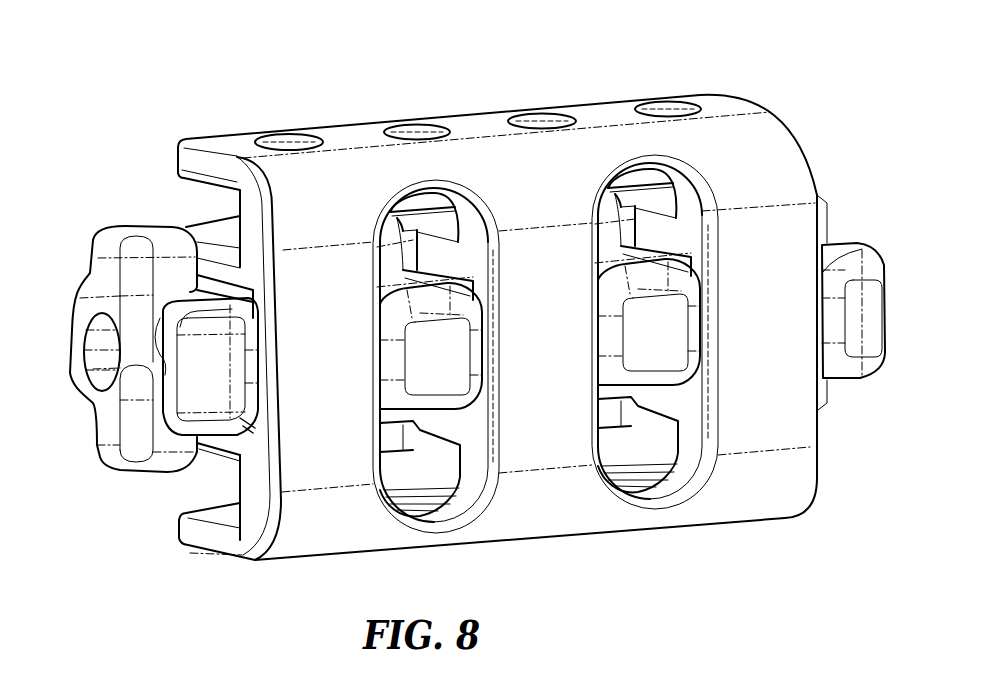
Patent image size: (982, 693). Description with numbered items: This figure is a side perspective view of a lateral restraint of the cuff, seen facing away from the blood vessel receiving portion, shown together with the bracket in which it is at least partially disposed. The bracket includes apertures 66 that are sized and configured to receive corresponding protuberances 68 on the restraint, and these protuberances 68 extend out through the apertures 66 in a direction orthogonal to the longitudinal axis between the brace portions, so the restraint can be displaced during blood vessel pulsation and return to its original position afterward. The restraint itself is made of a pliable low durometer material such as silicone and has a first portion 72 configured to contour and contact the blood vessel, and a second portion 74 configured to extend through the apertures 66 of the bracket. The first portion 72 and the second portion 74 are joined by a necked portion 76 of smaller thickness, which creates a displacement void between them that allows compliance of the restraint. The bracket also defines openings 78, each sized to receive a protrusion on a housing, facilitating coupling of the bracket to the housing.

The apertures 66 is at (433, 463).
The protuberances 68 is at (420, 370).
The first portion 72 is at (68, 325).
The second portion 74 is at (203, 390).
The necked portion 76 is at (147, 363).
The openings 78 is at (417, 130).